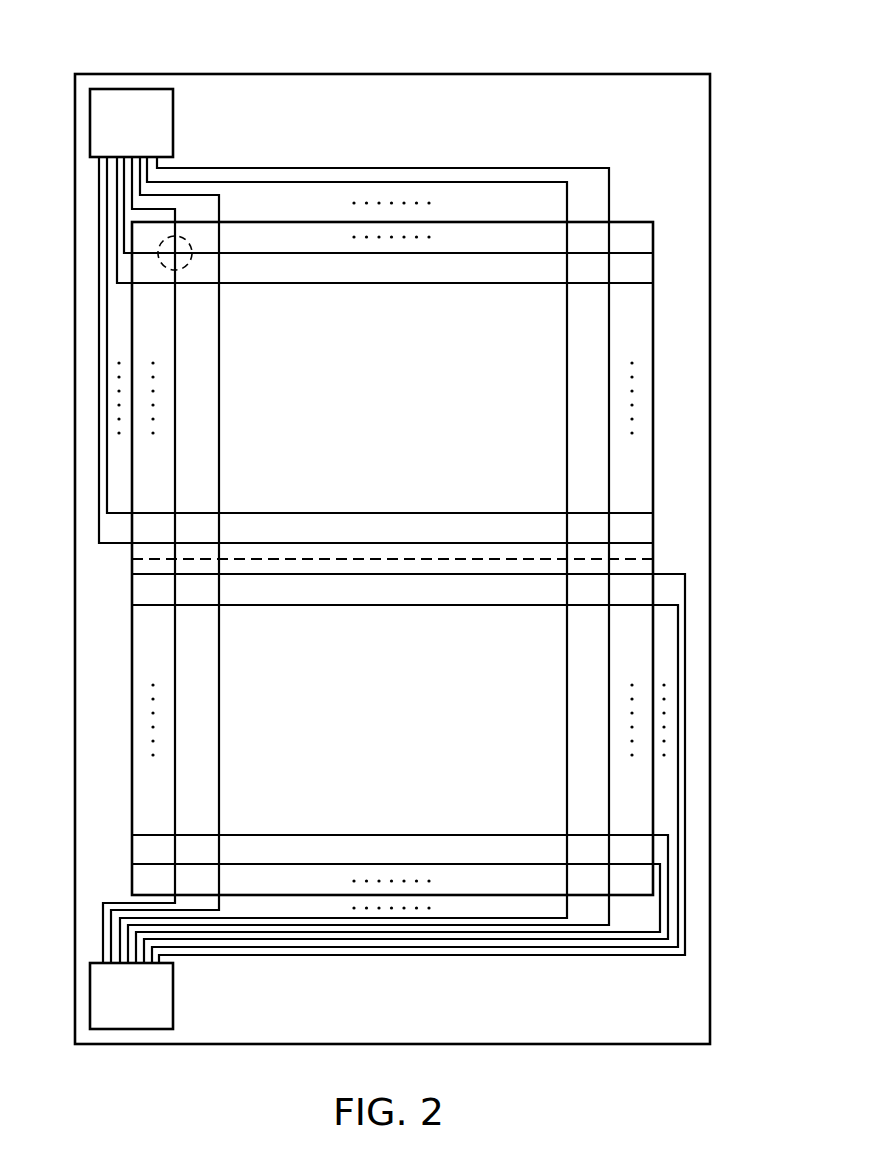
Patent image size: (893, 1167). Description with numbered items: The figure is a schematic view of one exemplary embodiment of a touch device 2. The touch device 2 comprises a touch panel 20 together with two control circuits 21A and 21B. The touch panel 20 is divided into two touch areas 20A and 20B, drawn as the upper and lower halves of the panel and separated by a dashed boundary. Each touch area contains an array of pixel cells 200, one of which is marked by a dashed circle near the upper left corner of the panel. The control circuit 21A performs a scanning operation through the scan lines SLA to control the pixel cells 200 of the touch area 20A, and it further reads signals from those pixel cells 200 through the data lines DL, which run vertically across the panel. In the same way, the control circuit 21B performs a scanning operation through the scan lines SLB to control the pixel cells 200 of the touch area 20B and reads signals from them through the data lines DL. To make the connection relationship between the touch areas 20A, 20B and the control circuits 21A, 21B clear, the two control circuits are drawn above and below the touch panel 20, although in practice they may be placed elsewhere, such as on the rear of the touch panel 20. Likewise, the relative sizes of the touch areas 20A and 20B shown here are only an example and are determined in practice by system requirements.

The touch device 2 is at (399, 25).
The touch panel 20 is at (132, 740).
The touch area 20A is at (418, 412).
The touch area 20B is at (418, 732).
The control circuit 21A is at (158, 138).
The control circuit 21B is at (158, 1011).
The pixel cell 200 is at (187, 241).
The data line DL is at (175, 320).
The scan line SLA is at (632, 251).
The scan line SLB is at (633, 574).